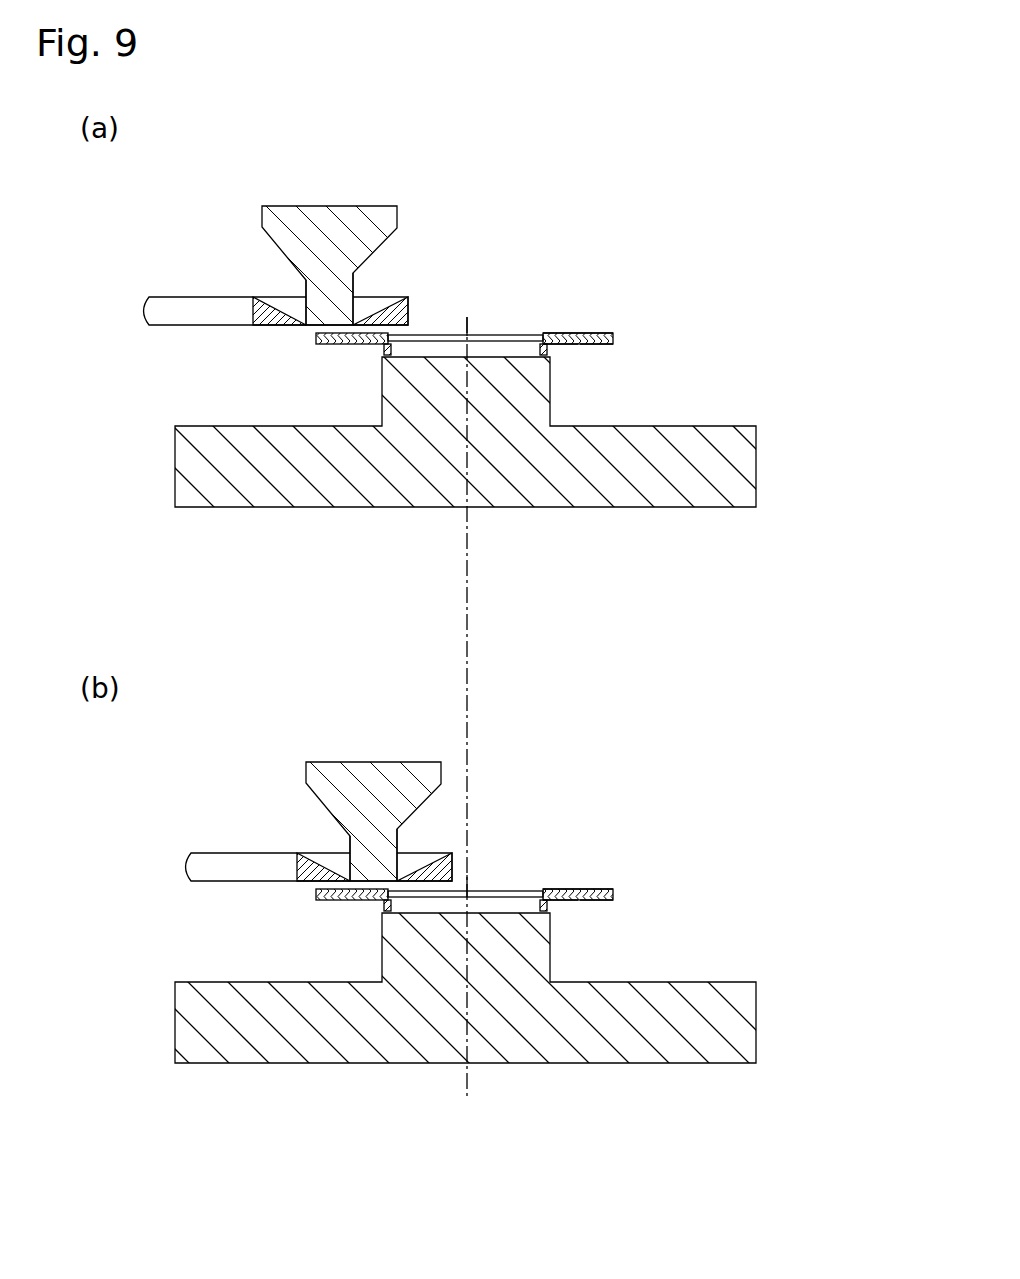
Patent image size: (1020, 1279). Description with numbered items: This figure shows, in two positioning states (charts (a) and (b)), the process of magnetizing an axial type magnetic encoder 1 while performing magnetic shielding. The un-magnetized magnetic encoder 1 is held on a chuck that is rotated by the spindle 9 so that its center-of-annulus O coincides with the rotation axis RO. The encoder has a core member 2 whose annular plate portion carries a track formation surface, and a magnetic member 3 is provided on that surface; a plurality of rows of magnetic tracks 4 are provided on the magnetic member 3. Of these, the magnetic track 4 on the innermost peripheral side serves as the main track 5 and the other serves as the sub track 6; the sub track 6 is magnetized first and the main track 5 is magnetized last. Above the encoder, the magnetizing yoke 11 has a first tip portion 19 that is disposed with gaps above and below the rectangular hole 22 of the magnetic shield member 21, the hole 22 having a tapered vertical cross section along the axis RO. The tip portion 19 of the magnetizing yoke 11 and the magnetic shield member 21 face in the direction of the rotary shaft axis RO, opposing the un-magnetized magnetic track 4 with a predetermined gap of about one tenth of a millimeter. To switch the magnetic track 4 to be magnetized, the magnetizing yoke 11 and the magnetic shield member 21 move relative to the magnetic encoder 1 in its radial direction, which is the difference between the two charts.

The magnetic encoder 1 is at (488, 333).
The core member 2 is at (592, 346).
The magnetic member 3 is at (316, 338).
The magnetic track 4 is at (626, 287).
The main track 5 is at (580, 326).
The sub track 6 is at (617, 326).
The spindle 9 is at (755, 467).
The magnetizing yoke 11 is at (383, 181).
The first tip portion 19 is at (320, 282).
The magnetic shield member 21 is at (404, 297).
The rectangular hole 22 is at (287, 303).